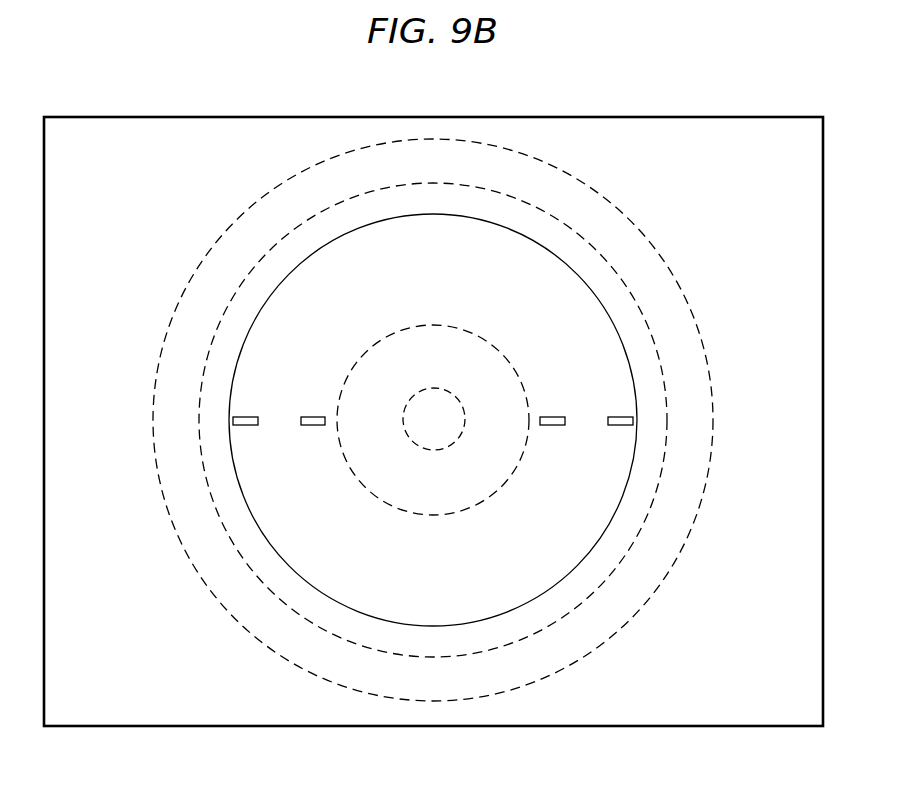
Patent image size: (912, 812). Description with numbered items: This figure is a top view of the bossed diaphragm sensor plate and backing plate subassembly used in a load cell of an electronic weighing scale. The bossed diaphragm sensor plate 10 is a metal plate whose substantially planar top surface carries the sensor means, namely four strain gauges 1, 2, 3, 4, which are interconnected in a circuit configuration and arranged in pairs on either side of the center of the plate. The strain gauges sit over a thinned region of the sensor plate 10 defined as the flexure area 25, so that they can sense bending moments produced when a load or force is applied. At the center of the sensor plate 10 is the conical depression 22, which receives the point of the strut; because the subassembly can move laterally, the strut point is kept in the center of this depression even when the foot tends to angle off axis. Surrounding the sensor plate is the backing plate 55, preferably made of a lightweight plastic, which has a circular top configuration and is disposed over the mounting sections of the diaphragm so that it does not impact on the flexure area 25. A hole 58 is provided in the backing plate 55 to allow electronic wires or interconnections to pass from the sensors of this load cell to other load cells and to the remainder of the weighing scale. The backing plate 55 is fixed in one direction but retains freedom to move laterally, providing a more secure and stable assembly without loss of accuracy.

The bossed diaphragm sensor plate 10 is at (780, 341).
The backing plate 55 is at (563, 198).
The flexure area 25 is at (287, 474).
The conical depression 22 is at (428, 412).
The strain gauge 1 is at (244, 417).
The strain gauge 2 is at (314, 417).
The strain gauge 3 is at (553, 417).
The strain gauge 4 is at (617, 417).
The hole 58 is at (397, 592).